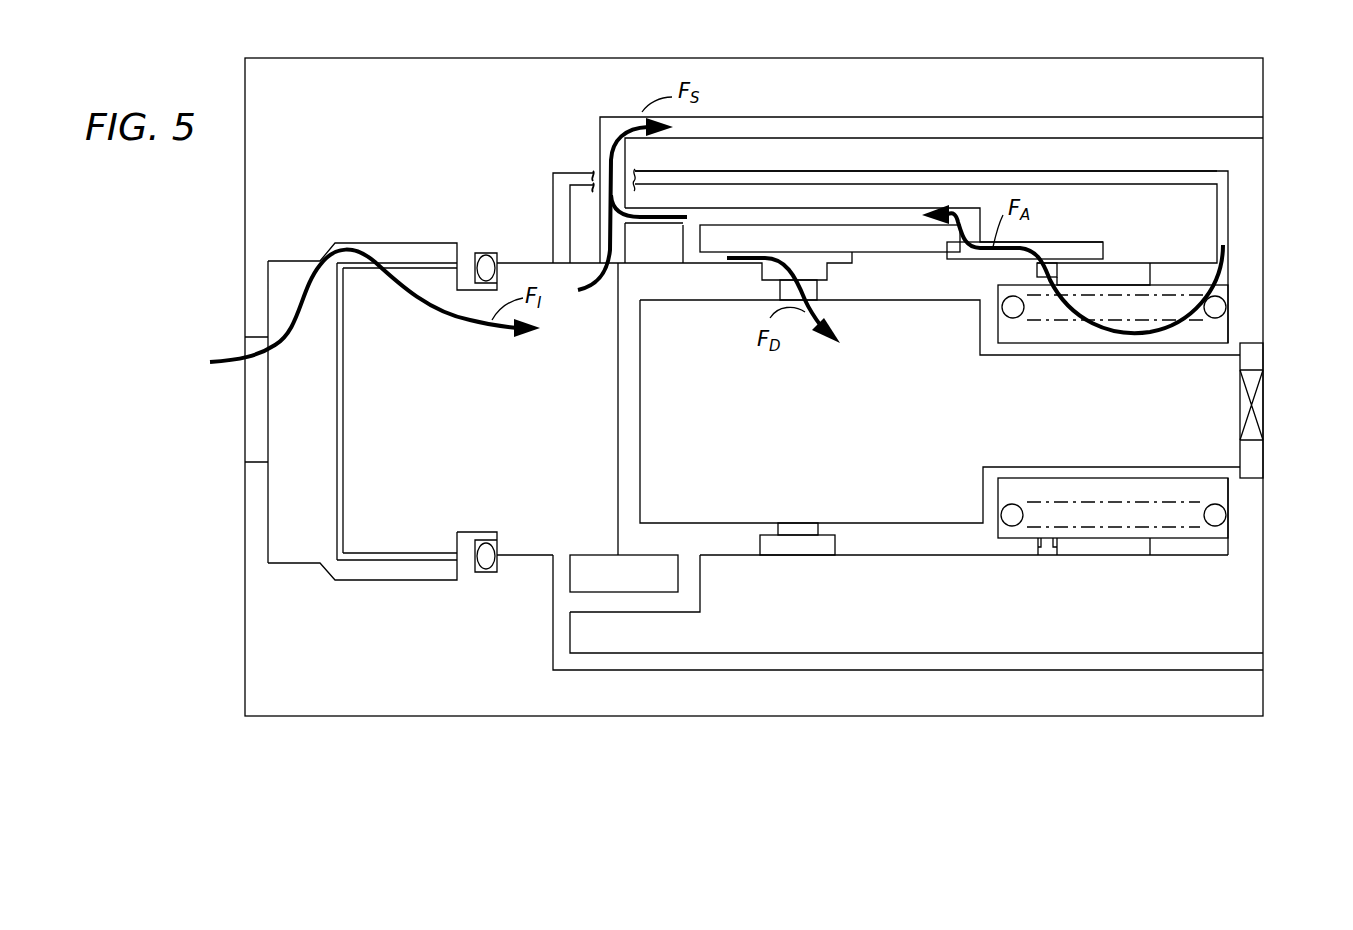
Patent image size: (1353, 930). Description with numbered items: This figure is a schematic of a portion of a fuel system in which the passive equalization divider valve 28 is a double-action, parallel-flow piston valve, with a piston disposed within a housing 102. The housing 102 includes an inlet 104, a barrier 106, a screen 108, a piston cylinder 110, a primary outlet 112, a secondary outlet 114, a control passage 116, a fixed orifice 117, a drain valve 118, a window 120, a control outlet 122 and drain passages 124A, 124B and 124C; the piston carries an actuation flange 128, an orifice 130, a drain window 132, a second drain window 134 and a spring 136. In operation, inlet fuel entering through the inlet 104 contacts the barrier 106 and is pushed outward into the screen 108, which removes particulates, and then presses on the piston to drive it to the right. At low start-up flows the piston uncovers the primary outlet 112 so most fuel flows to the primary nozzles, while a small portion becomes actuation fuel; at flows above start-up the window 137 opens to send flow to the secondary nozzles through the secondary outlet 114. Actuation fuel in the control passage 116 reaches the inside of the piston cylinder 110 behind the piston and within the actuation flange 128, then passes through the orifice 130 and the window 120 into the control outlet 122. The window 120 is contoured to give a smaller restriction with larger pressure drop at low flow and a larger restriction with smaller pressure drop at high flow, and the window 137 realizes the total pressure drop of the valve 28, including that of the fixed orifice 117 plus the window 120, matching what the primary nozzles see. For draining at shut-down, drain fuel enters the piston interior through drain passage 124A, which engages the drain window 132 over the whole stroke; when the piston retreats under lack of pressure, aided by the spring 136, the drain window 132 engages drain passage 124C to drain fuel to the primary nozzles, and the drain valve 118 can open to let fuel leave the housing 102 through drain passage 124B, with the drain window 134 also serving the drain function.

The passive equalization divider valve 28 is at (1070, 40).
The housing 102 is at (392, 142).
The inlet 104 is at (265, 462).
The barrier 106 is at (342, 405).
The screen 108 is at (367, 552).
The piston cylinder 110 is at (532, 550).
The primary outlet 112 is at (801, 657).
The secondary outlet 114 is at (855, 132).
The control passage 116 is at (983, 176).
The fixed orifice 117 is at (555, 228).
The drain valve 118 is at (1252, 440).
The window 120 is at (1057, 248).
The control outlet 122 is at (755, 215).
The drain passage 124A is at (825, 257).
The drain passage 124B is at (1254, 344).
The drain passage 124C is at (607, 607).
The actuation flange 128 is at (1120, 272).
The orifice 130 is at (1040, 272).
The drain window 132 is at (792, 288).
The drain window 134 is at (1240, 451).
The spring 136 is at (1218, 304).
The window 137 is at (598, 258).